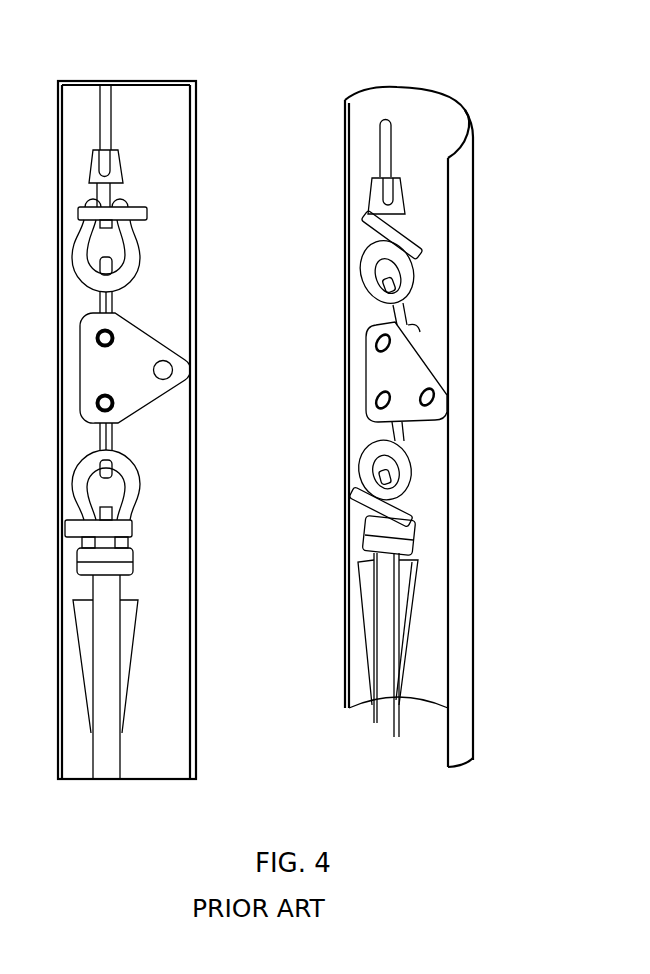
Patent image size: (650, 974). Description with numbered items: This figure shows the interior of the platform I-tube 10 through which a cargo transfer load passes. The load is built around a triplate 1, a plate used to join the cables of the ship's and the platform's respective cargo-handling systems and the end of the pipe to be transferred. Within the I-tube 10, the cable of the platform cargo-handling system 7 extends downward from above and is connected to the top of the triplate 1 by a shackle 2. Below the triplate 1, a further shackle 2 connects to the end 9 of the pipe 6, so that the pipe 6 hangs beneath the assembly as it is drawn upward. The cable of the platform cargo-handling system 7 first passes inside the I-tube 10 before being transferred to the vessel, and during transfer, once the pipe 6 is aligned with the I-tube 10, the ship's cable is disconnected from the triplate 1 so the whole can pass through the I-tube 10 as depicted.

The I-tube 10 is at (348, 94).
The cable of the platform cargo-handling system 7 is at (122, 165).
The shackle 2 is at (113, 302).
The triplate 1 is at (357, 366).
The end of the pipe 9 is at (140, 561).
The pipe 6 is at (140, 648).